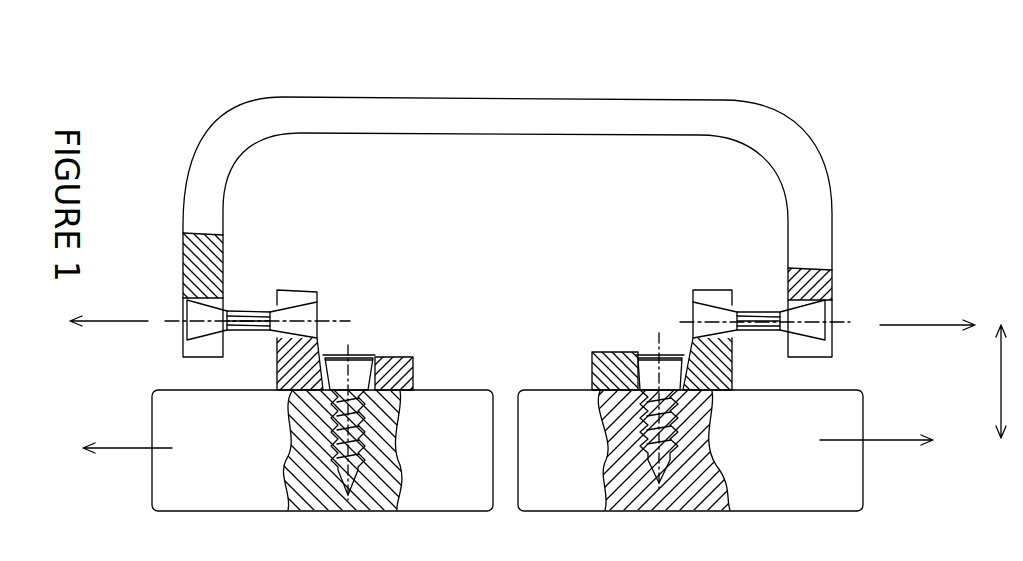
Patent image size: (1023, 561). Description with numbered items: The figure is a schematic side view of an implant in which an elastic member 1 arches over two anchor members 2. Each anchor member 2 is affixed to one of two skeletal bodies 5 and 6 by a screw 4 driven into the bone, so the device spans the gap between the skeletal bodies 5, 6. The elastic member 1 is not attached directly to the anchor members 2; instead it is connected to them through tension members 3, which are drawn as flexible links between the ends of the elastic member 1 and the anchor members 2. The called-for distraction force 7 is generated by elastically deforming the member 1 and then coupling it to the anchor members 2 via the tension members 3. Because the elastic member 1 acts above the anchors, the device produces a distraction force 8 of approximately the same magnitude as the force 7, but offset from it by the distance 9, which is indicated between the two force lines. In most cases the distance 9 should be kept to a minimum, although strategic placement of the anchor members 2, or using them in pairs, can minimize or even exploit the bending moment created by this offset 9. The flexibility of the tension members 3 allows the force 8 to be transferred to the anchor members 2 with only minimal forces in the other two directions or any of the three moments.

The elastic member 1 is at (340, 117).
The anchor members 2 is at (290, 298).
The tension members 3 is at (753, 313).
The screws 4 is at (335, 458).
The skeletal body 5 is at (440, 415).
The skeletal body 6 is at (553, 422).
The distraction force 7 is at (878, 440).
The distraction force 8 is at (907, 325).
The distance 9 is at (1000, 402).